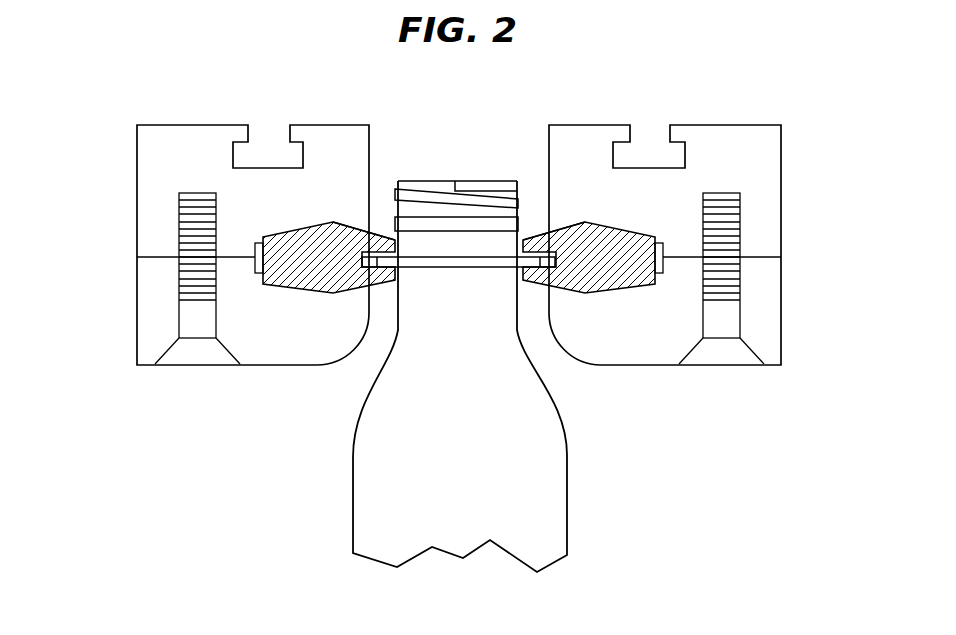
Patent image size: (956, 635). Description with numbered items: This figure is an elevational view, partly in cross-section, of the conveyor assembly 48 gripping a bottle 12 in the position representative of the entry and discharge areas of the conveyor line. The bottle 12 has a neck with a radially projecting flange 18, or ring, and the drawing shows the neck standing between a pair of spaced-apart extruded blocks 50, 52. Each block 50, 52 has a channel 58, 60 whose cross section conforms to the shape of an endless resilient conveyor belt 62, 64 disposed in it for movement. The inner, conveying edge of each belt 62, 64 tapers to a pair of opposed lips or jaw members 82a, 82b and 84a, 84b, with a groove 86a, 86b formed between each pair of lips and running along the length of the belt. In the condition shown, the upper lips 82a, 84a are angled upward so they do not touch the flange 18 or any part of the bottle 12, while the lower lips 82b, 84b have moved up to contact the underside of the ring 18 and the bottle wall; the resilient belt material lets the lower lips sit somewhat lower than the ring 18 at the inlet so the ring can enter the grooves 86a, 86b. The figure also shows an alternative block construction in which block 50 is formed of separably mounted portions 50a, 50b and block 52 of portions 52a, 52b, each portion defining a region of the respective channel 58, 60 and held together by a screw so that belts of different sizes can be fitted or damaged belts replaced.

The bottle 12 is at (470, 438).
The flange 18 is at (462, 258).
The conveyor assembly 48 is at (470, 226).
The block 50 is at (203, 278).
The block portion 50a is at (137, 167).
The block portion 50b is at (137, 292).
The block 52 is at (726, 278).
The block portion 52a is at (783, 186).
The block portion 52b is at (783, 288).
The channel 58 is at (255, 274).
The channel 60 is at (660, 274).
The conveyor belt 62 is at (298, 274).
The conveyor belt 64 is at (615, 278).
The upper lip 82a is at (367, 257).
The lower lip 82b is at (383, 268).
The upper lip 84a is at (550, 257).
The lower lip 84b is at (533, 268).
The groove 86a is at (366, 232).
The groove 86b is at (553, 254).